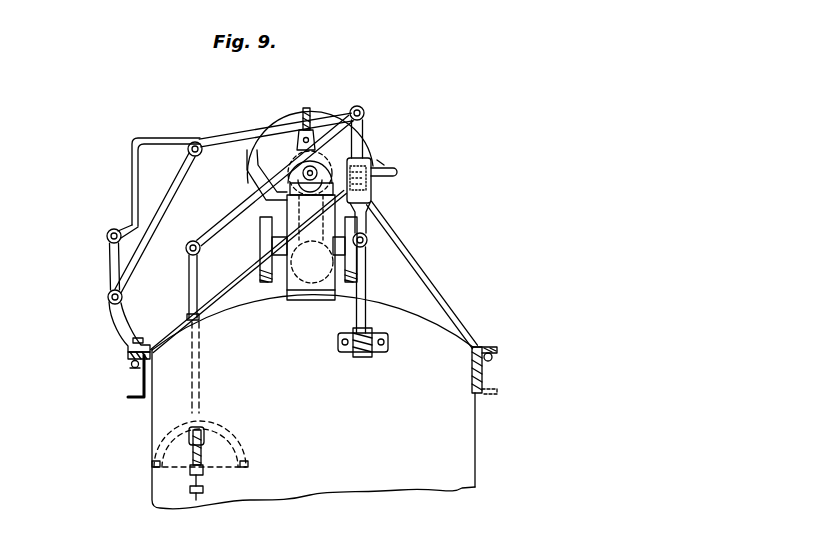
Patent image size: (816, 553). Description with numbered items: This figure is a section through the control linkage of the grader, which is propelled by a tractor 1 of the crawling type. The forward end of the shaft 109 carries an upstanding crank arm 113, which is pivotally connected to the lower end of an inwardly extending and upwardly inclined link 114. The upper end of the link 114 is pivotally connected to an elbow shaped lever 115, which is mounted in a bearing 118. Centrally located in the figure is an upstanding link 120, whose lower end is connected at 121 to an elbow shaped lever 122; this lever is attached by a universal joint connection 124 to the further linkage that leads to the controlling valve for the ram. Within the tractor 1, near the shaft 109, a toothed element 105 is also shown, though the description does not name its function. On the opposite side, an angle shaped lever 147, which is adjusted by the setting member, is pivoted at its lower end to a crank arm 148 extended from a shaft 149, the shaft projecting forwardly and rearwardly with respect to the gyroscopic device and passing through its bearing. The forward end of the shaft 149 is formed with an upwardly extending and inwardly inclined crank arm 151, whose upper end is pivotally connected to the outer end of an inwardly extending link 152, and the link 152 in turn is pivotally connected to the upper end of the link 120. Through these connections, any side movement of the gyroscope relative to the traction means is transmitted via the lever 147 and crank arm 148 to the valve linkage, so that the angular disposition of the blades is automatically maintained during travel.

The tractor 1 is at (453, 445).
The gear segment 105 is at (237, 434).
The shaft 109 is at (190, 456).
The crank arm 113 is at (196, 277).
The link 114 is at (230, 216).
The elbow shaped lever 115 is at (364, 119).
The bearing 118 is at (423, 263).
The link 120 is at (372, 196).
The connection 121 is at (367, 237).
The elbow shaped lever 122 is at (368, 292).
The universal joint connection 124 is at (373, 355).
The angle shaped lever 147 is at (149, 137).
The crank arm 148 is at (116, 257).
The shaft 149 is at (126, 321).
The crank arm 151 is at (160, 207).
The link 152 is at (248, 134).